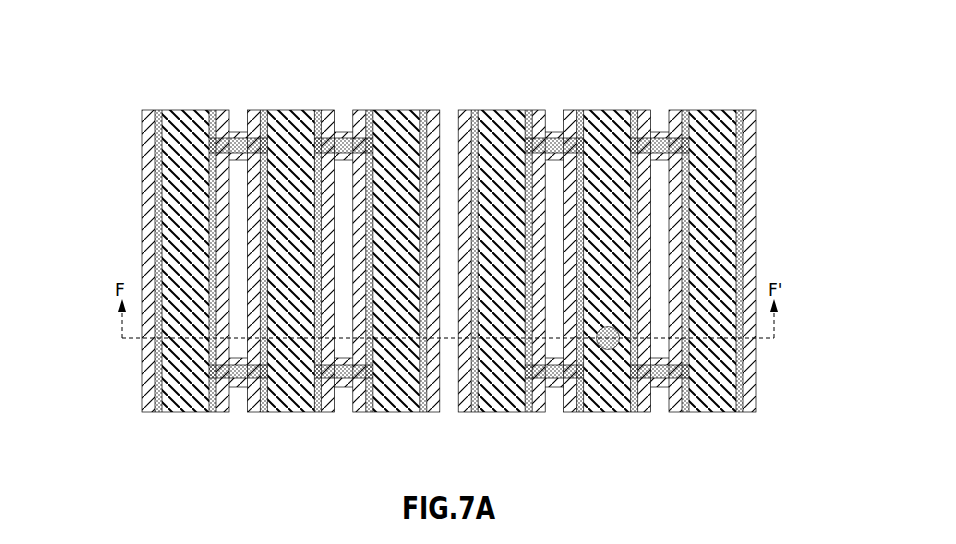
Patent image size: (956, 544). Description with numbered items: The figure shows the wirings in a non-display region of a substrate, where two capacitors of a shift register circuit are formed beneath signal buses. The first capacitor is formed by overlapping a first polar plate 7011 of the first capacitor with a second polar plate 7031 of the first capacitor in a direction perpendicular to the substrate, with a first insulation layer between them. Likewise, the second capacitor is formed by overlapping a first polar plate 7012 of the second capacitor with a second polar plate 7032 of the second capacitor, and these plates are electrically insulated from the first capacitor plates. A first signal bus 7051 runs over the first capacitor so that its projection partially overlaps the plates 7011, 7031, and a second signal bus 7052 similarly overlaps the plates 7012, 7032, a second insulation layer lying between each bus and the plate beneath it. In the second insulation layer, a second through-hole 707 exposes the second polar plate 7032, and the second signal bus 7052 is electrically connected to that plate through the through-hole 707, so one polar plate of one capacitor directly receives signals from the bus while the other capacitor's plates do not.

The first polar plate of the first capacitor 7011 is at (147, 140).
The second polar plate of the first capacitor 7031 is at (156, 174).
The first signal bus 7051 is at (170, 211).
The first polar plate of the second capacitor 7012 is at (752, 181).
The second polar plate of the second capacitor 7032 is at (740, 219).
The second signal bus 7052 is at (722, 257).
The second through-hole 707 is at (613, 349).